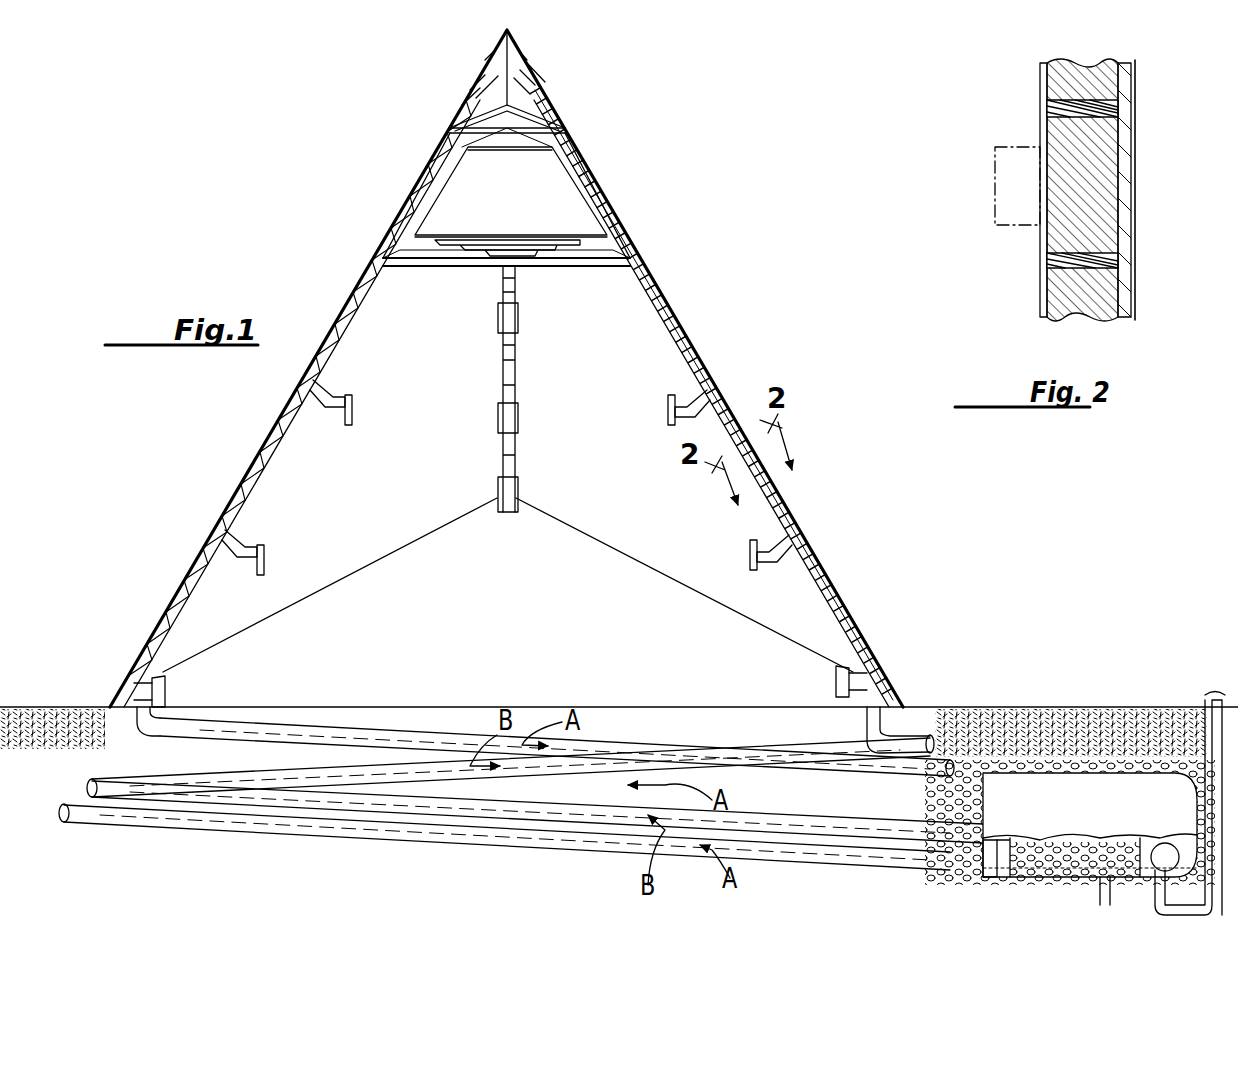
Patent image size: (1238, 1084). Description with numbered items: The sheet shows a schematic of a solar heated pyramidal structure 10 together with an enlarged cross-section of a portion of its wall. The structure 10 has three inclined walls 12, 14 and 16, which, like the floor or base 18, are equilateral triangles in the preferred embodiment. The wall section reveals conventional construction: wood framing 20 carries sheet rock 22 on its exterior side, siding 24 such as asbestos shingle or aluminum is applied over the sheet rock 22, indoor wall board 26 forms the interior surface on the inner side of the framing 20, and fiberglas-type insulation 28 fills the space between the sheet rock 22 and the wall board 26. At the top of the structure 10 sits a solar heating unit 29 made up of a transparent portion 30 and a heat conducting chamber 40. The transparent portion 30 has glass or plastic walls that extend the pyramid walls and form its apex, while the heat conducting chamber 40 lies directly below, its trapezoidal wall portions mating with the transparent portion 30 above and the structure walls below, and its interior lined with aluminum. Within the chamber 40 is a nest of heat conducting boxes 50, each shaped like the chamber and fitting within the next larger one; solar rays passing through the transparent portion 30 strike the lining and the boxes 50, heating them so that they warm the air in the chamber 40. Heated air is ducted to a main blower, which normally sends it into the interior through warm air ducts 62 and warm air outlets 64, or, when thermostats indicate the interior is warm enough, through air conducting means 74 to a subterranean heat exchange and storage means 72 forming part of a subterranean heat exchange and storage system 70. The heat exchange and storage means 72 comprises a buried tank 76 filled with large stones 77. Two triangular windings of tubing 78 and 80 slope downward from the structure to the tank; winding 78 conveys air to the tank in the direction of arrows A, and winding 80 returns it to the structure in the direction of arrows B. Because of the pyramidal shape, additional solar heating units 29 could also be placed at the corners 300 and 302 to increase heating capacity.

In FIG. 1, the pyramidal structure 10 is at (506, 368).
In FIG. 1, the inclined wall 12 is at (330, 572).
In FIG. 1, the inclined wall 14 is at (684, 582).
In FIG. 1, the inclined wall 16 is at (302, 403).
In FIG. 1, the floor or base 18 is at (716, 398).
In FIG. 2, the wood framing 20 is at (1051, 167).
In FIG. 2, the sheet rock 22 is at (1156, 171).
In FIG. 2, the siding 24 is at (1165, 190).
In FIG. 2, the indoor wall board 26 is at (1007, 190).
In FIG. 2, the insulation 28 is at (1128, 190).
In FIG. 1, the solar heating unit 29 is at (541, 162).
In FIG. 1, the transparent portion 30 is at (551, 80).
In FIG. 1, the heat conducting chamber 40 is at (555, 223).
In FIG. 1, the nest of heat conducting boxes 50 is at (557, 192).
In FIG. 1, the warm air ducts 62 is at (497, 389).
In FIG. 2, the warm air ducts 62 is at (984, 198).
In FIG. 1, the warm air outlets 64 is at (500, 505).
In FIG. 1, the subterranean heat exchange and storage system 70 is at (619, 750).
In FIG. 1, the heat exchange and storage means 72 is at (1090, 777).
In FIG. 1, the air conducting means 74 is at (504, 855).
In FIG. 1, the tank 76 is at (1175, 774).
In FIG. 1, the large stones 77 is at (1090, 898).
In FIG. 1, the winding of tubing 78 is at (557, 719).
In FIG. 1, the winding of tubing 80 is at (535, 790).
In FIG. 1, the corner 300 is at (101, 682).
In FIG. 1, the corner 302 is at (921, 687).